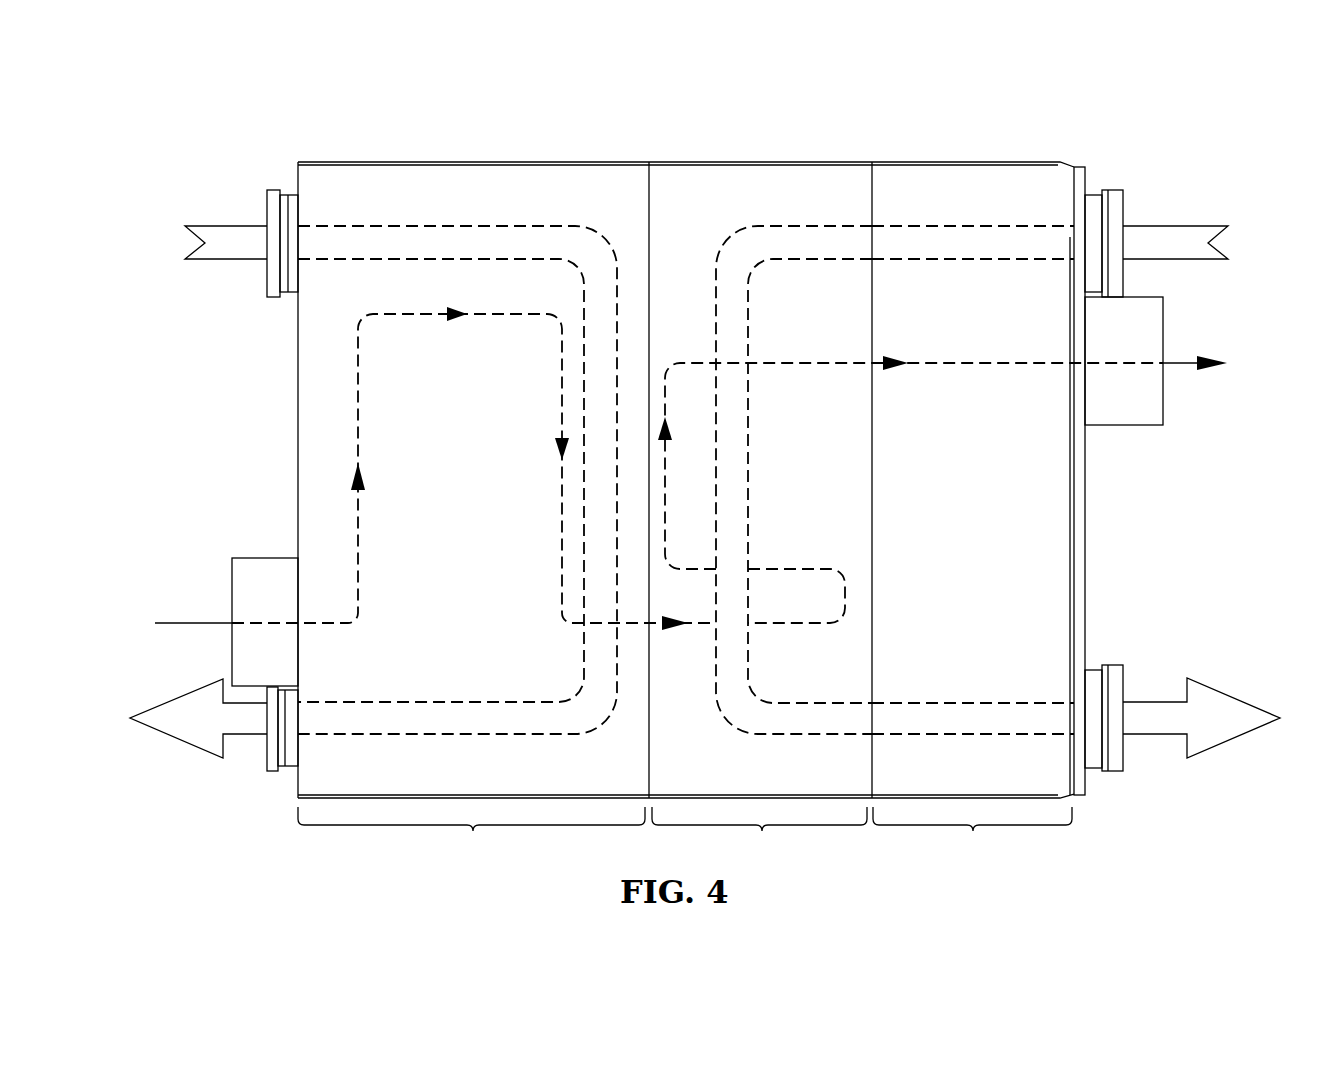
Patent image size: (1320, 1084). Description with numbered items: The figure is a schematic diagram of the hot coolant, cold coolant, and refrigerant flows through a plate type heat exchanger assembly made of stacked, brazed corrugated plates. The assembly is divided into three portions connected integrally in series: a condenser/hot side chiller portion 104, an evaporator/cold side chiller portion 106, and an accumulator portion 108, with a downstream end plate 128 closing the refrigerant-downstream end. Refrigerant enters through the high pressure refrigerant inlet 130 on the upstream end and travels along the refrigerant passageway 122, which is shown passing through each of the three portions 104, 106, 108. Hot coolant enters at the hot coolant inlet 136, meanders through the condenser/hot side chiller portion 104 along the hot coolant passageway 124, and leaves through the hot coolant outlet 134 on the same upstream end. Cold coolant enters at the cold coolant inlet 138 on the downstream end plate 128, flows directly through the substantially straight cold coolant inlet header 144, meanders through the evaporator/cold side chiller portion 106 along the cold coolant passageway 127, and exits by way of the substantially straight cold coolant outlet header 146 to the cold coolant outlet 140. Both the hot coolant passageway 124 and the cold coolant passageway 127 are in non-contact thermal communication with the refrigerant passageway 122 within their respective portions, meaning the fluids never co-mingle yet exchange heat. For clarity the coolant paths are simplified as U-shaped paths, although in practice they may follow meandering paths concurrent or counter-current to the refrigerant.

The condenser/hot side chiller portion 104 is at (473, 513).
The evaporator/cold side chiller portion 106 is at (762, 513).
The accumulator portion 108 is at (972, 835).
The refrigerant passageway 122 is at (358, 378).
The hot coolant passageway 124 is at (455, 240).
The cold coolant passageway 127 is at (725, 290).
The downstream end plate 128 is at (1078, 170).
The high pressure refrigerant inlet 130 is at (232, 572).
The hot coolant outlet 134 is at (265, 755).
The hot coolant inlet 136 is at (267, 208).
The cold coolant inlet 138 is at (1123, 205).
The cold coolant outlet 140 is at (1120, 753).
The cold coolant inlet header 144 is at (963, 243).
The cold coolant outlet header 146 is at (953, 712).